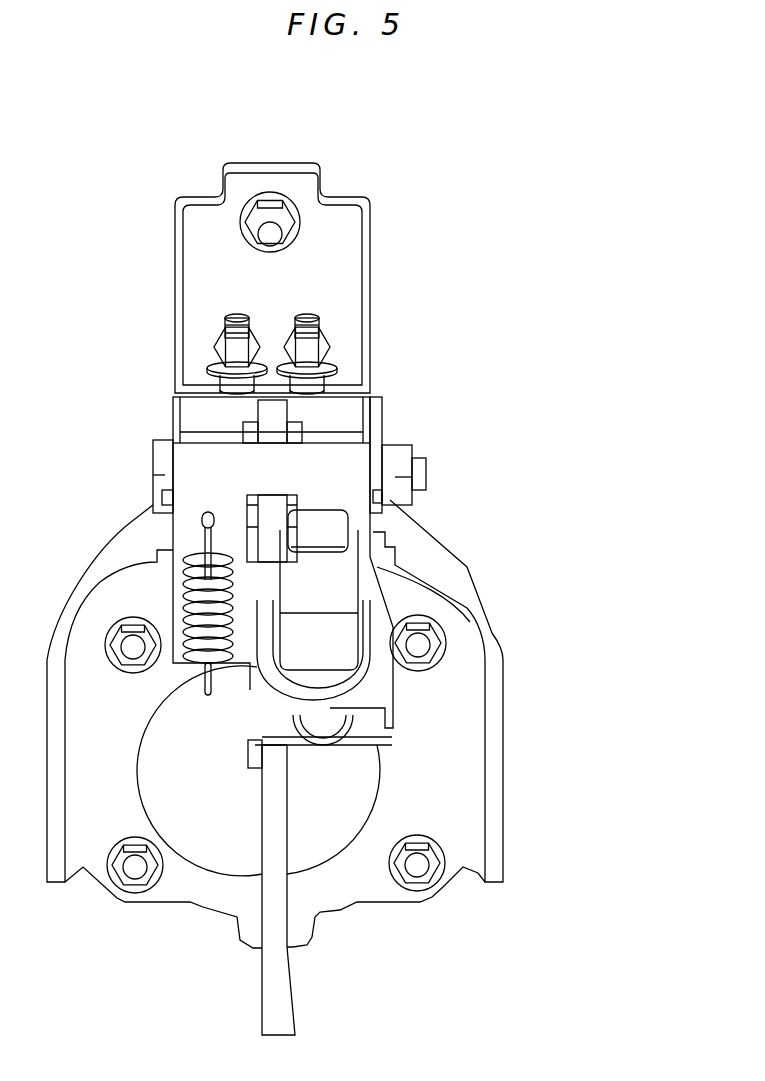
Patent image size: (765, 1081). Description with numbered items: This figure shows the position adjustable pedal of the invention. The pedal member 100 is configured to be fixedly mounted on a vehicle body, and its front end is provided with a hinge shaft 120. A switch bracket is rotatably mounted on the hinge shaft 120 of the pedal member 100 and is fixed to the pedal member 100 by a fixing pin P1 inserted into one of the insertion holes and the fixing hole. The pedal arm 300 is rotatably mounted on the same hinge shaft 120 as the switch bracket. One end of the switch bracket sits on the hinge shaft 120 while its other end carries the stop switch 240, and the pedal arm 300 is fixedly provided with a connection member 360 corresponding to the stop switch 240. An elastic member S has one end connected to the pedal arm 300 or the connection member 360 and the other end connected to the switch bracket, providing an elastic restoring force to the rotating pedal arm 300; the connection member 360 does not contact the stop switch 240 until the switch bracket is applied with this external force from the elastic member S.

The pedal member 100 is at (493, 590).
The hinge shaft 120 is at (407, 463).
The fixing pin P1 is at (380, 500).
The elastic member S is at (183, 630).
The stop switch 240 is at (330, 645).
The connection member 360 is at (262, 730).
The pedal arm 300 is at (273, 965).